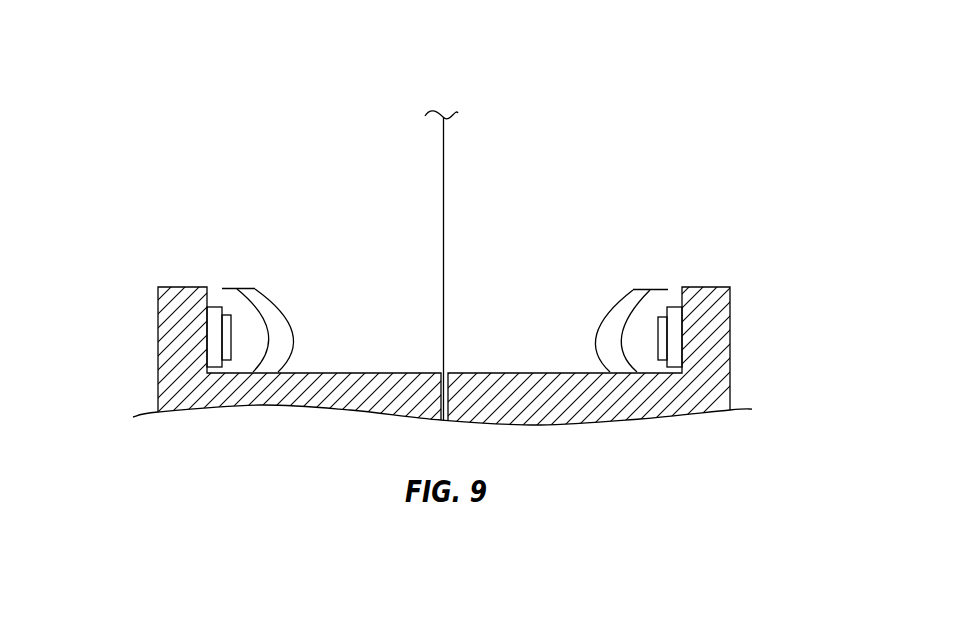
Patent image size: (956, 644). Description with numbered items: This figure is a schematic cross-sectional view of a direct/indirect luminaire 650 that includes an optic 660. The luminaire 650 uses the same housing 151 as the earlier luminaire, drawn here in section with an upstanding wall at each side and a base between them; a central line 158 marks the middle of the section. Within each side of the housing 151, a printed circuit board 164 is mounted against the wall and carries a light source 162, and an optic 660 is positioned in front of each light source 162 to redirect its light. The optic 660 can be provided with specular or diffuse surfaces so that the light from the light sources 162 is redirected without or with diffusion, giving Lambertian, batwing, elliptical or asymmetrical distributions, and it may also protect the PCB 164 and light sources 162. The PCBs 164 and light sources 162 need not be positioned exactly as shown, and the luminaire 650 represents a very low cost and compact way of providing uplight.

The housing 151 is at (177, 383).
The center divider / split line 158 is at (443, 155).
The second light source 162 is at (217, 310).
The printed circuit board 164 is at (214, 318).
The optic 660 is at (273, 313).
The direct/indirect luminaire 650 is at (702, 120).